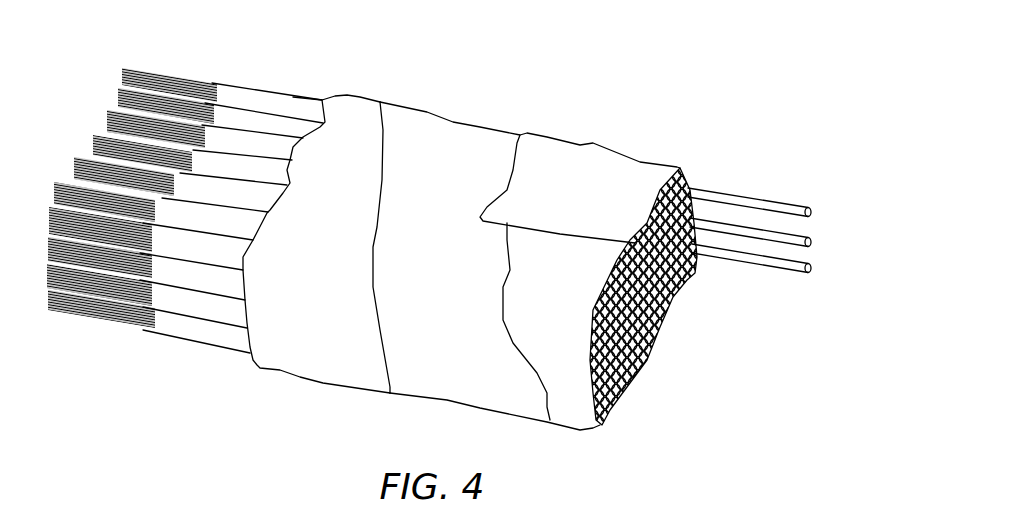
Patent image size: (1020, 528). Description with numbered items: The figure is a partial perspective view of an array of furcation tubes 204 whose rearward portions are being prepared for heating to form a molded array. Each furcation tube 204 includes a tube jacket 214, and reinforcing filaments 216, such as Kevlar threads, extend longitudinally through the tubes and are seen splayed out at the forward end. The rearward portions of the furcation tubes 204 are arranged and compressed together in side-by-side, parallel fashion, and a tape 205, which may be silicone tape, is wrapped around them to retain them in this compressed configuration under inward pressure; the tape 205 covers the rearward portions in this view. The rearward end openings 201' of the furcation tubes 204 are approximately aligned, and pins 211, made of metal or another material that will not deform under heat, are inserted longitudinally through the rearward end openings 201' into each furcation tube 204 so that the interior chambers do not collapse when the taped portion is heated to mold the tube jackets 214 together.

The reinforcing filaments 216 is at (211, 83).
The tube jacket 214 is at (212, 247).
The furcation tubes 204 is at (297, 98).
The tape 205 is at (481, 127).
The rearward end openings 201' is at (684, 295).
The pins 211 is at (728, 187).